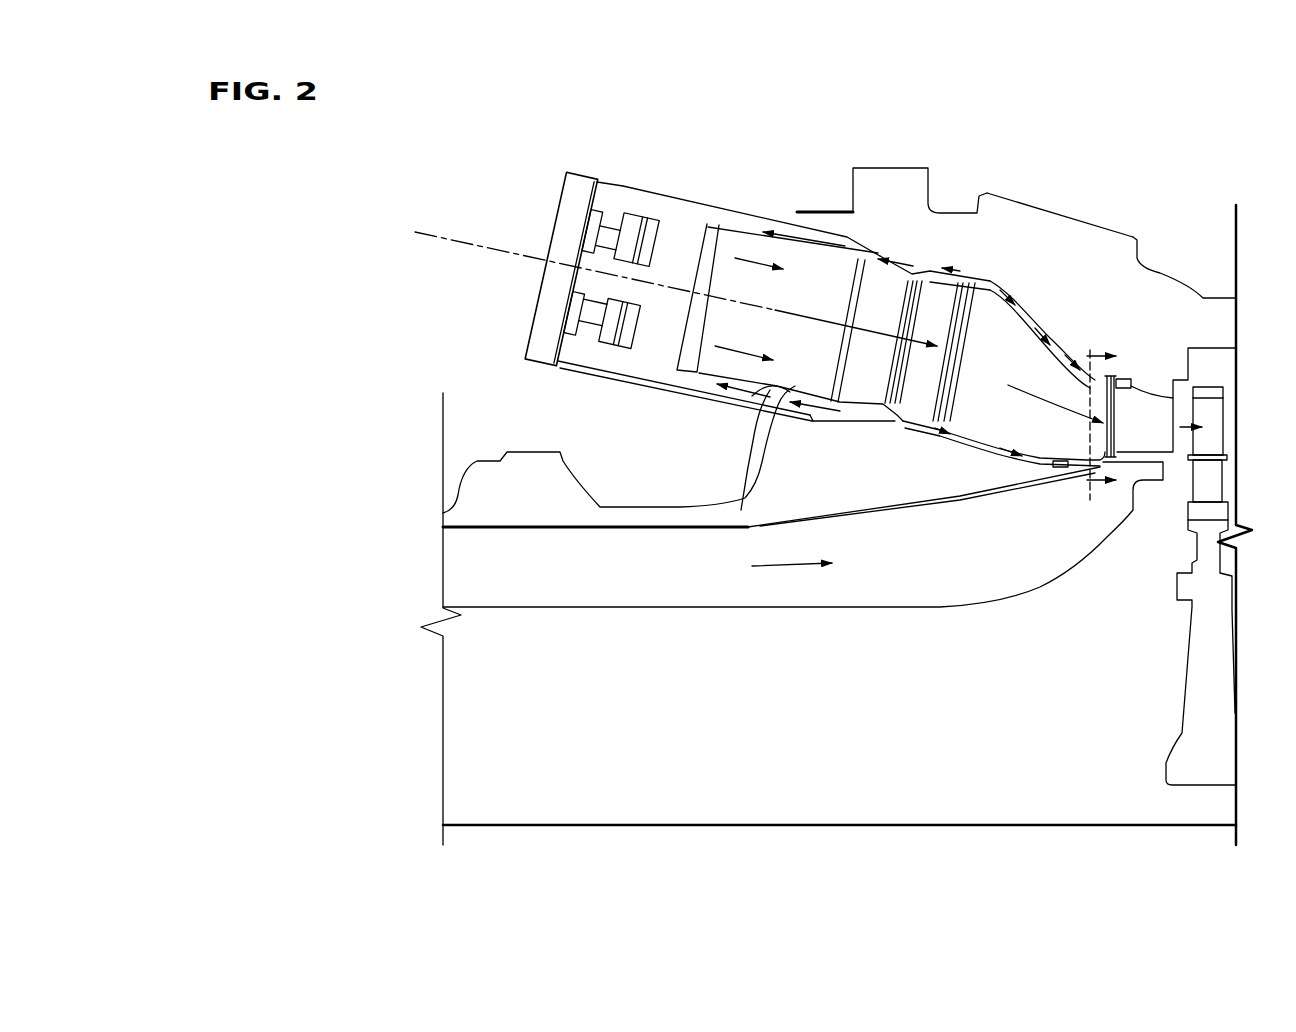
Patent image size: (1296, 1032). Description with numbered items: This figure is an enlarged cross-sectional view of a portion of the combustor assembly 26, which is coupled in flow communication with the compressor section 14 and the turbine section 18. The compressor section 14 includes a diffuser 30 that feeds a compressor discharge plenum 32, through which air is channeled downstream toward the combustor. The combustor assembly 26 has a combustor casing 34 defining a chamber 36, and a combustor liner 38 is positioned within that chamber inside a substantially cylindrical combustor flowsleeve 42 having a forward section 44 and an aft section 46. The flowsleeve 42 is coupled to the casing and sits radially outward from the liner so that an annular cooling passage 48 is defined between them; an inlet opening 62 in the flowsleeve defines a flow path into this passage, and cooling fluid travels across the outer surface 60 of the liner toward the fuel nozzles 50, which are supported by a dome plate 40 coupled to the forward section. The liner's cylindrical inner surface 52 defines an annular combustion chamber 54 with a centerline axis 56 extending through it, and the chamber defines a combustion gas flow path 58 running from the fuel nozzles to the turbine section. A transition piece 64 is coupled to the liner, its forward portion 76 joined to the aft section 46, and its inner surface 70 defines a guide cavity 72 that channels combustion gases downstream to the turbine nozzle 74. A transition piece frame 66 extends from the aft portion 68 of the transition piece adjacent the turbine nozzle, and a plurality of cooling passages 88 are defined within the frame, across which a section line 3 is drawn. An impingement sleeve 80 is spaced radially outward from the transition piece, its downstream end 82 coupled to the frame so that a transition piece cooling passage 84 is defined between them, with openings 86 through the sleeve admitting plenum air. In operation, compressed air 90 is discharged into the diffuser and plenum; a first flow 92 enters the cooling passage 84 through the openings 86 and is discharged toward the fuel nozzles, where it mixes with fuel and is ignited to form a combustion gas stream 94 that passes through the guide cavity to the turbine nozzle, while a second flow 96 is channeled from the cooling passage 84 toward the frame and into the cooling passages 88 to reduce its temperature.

The section line 3- 3 is at (1106, 421).
The compressor section 14 is at (942, 158).
The turbine section 18 is at (1216, 280).
The combustor assembly 26 is at (1062, 153).
The diffuser 30 is at (853, 510).
The compressor discharge plenum 32 is at (928, 522).
The combustor casing 34 is at (894, 167).
The chamber 36 is at (1098, 252).
The combustor liner 38 is at (847, 250).
The dome plate 40 is at (589, 153).
The combustor flowsleeve 42 is at (863, 255).
The forward section 44 is at (673, 152).
The aft section 46 is at (813, 430).
The annular cooling passage 48 is at (860, 412).
The fuel nozzles 50 is at (678, 203).
The inner surface 52 is at (738, 445).
The combustion chamber 54 is at (737, 386).
The centerline axis 56 is at (455, 241).
The combustion gas flow path 58 is at (850, 322).
The outer surface 60 is at (742, 227).
The inlet opening 62 is at (922, 258).
The transition piece 64 is at (1065, 348).
The transition piece frame 66 is at (1115, 378).
The aft portion 68 is at (1068, 487).
The inner surface 70 is at (1010, 452).
The guide cavity 72 is at (1040, 372).
The turbine nozzle 74 is at (1213, 412).
The forward portion 76 is at (1005, 272).
The impingement sleeve 80 is at (1040, 467).
The downstream end 82 is at (1062, 472).
The transition piece cooling passage 84 is at (947, 428).
The openings 86 is at (1077, 327).
The cooling passages 88 is at (1132, 393).
The compressed air 90 is at (803, 562).
The first flow 92 is at (987, 447).
The combustion gas stream 94 is at (765, 262).
The second flow 96 is at (1072, 368).